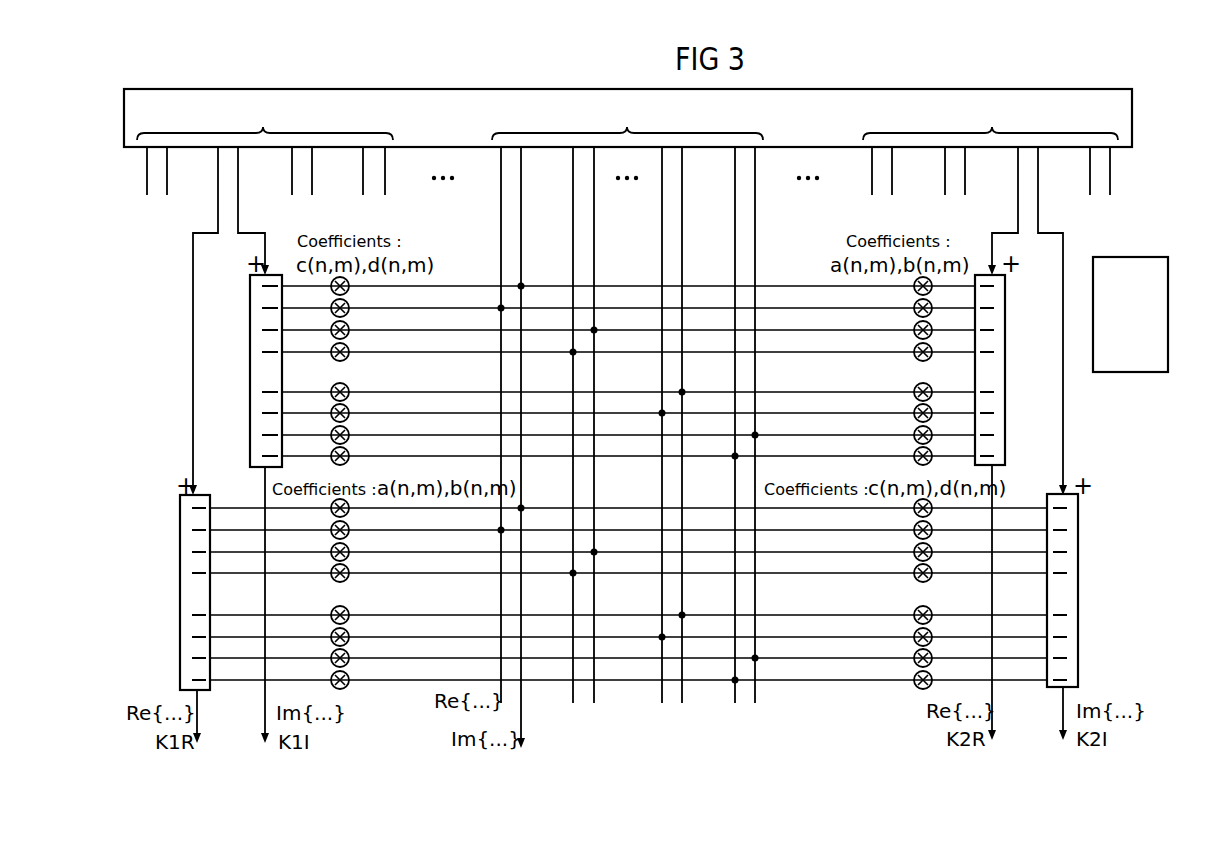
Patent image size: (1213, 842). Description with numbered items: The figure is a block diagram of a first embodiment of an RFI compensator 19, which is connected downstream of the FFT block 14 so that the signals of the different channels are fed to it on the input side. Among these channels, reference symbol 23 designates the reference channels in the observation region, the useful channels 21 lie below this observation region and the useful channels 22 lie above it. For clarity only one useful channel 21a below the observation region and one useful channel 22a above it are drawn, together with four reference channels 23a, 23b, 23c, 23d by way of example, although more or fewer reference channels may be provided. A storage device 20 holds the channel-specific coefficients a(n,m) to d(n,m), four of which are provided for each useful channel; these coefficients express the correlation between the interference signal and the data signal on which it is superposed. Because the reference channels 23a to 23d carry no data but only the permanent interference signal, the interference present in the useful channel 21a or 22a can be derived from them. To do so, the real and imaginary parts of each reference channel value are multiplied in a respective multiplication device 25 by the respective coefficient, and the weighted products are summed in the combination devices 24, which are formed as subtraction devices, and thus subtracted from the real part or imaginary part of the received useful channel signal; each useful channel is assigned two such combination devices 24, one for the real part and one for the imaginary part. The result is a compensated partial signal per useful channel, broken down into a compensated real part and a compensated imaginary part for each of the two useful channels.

The FFT block 14 is at (1132, 115).
The RFI compensator 19 is at (1112, 633).
The storage device 20 is at (1127, 372).
The useful channels below the observation region 21 is at (265, 147).
The useful channel below the observation region 21a is at (240, 213).
The useful channels above the observation region 22 is at (990, 147).
The useful channel above the observation region 22a is at (1018, 216).
The reference channels in the observation region 23 is at (627, 119).
The first reference channel 23a is at (521, 226).
The second reference channel 23b is at (574, 268).
The third reference channel 23c is at (682, 228).
The fourth reference channel 23d is at (735, 268).
The combination device 24 is at (250, 375).
The multiplication device 25 is at (345, 690).